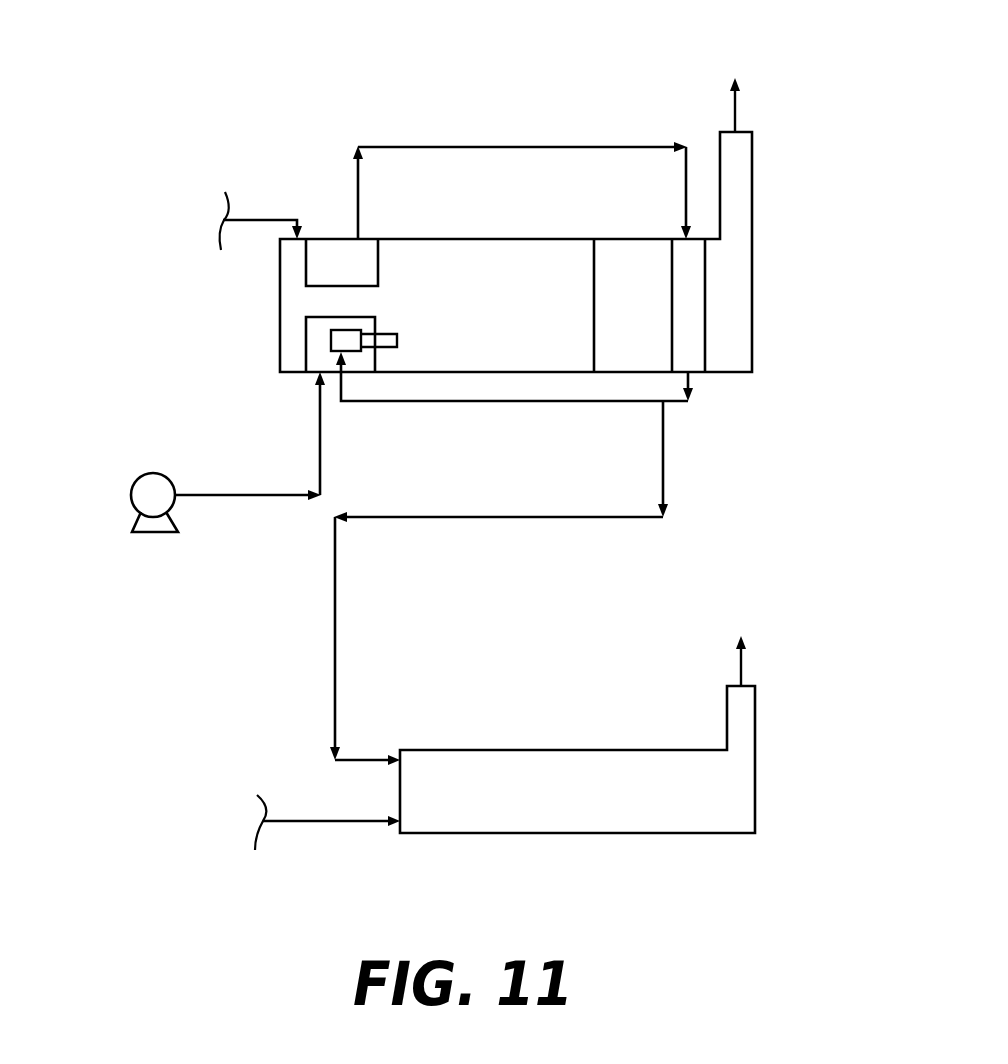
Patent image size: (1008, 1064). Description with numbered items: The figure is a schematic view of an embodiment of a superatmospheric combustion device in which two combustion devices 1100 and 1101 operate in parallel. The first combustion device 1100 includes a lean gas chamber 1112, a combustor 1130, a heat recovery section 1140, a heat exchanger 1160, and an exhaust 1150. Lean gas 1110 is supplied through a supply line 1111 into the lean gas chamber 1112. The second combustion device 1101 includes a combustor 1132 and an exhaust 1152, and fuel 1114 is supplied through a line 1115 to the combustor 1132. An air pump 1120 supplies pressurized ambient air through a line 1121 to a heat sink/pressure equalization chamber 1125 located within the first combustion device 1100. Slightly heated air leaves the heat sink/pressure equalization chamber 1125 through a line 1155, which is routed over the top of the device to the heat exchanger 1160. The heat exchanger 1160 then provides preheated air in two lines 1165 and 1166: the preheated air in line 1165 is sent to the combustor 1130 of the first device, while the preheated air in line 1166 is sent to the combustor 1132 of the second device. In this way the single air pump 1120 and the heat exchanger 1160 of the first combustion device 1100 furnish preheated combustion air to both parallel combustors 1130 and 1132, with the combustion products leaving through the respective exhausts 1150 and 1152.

The combustion device 1100 is at (426, 236).
The combustion device 1101 is at (562, 736).
The lean gas 1110 is at (179, 213).
The supply line 1111 is at (245, 220).
The lean gas chamber 1112 is at (290, 273).
The fuel 1114 is at (216, 824).
The line 1115 is at (283, 823).
The air pump 1120 is at (130, 495).
The line 1121 is at (203, 495).
The heat sink/pressure equalization chamber 1125 is at (348, 266).
The combustor 1130 is at (517, 318).
The combustor 1132 is at (592, 805).
The heat recovery section 1140 is at (668, 325).
The exhaust 1150 is at (736, 75).
The exhaust 1152 is at (742, 630).
The line 1155 is at (415, 147).
The heat exchanger 1160 is at (687, 287).
The line 1165 is at (495, 401).
The line 1166 is at (458, 518).